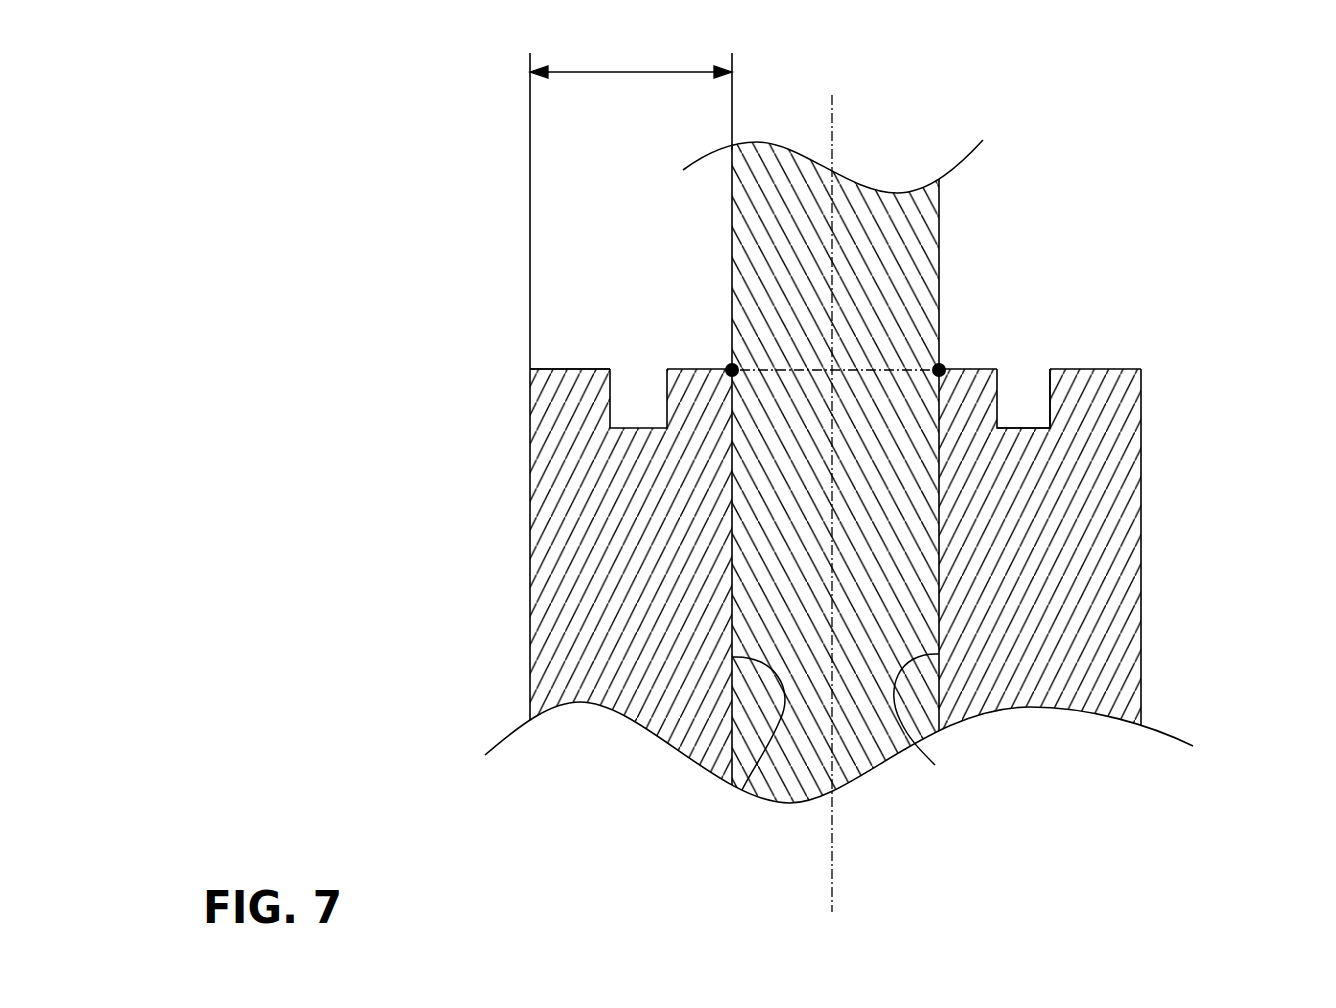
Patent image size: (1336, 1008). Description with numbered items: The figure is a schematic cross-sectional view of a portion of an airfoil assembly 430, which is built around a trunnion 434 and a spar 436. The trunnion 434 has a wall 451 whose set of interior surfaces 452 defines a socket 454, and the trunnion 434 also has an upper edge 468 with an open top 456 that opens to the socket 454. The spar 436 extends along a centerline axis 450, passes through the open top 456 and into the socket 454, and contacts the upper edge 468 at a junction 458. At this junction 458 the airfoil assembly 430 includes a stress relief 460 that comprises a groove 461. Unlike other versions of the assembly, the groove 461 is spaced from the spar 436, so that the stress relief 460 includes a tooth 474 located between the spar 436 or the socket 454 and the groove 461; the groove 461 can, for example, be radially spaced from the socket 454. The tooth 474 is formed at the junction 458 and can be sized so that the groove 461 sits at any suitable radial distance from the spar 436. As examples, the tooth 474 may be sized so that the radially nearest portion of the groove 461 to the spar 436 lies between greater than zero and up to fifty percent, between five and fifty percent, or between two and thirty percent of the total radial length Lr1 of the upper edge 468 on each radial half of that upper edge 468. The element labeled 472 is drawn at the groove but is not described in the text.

The airfoil assembly 430 is at (306, 252).
The trunnion 434 is at (530, 492).
The spar 436 is at (732, 252).
The centerline axis 450 is at (834, 133).
The wall 451 is at (1143, 497).
The interior surfaces 452 is at (742, 790).
The socket 454 is at (908, 494).
The open top 456 is at (795, 358).
The junction 458 is at (730, 372).
The stress relief 460 is at (1000, 368).
The groove 461 is at (645, 402).
The upper edge 468 is at (530, 369).
The groove wall 472 is at (1052, 386).
The tooth 474 is at (998, 395).
The total radial length Lr1 is at (685, 68).